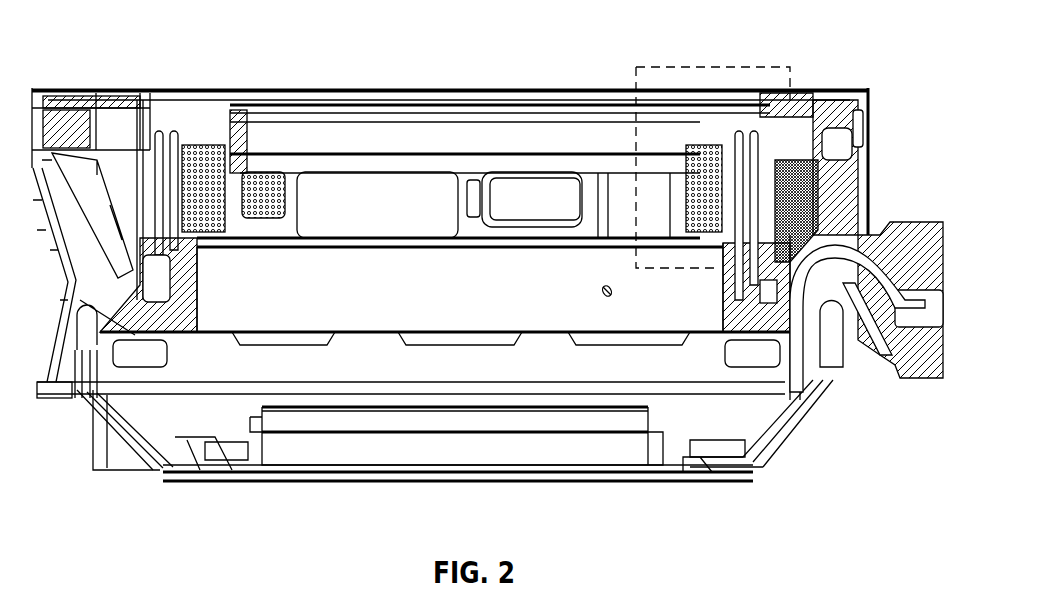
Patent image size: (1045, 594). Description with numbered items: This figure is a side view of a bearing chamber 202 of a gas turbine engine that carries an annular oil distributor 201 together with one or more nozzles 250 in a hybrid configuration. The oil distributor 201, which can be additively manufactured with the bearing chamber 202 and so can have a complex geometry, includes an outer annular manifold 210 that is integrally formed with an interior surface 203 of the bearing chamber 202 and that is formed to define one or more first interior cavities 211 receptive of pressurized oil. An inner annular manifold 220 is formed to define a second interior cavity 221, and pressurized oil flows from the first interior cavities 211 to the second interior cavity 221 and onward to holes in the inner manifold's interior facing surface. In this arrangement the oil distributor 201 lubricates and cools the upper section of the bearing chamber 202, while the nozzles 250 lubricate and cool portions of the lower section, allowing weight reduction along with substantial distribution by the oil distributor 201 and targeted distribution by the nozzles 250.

The bearing chamber 202 is at (70, 88).
The annular oil distributor 201 is at (153, 101).
The inner annular manifold 220 is at (708, 150).
The second interior cavity 221 is at (733, 150).
The outer annular manifold 210 is at (768, 157).
The first interior cavities 211 is at (856, 212).
The interior surface 203 is at (773, 313).
The nozzles 250 is at (188, 470).